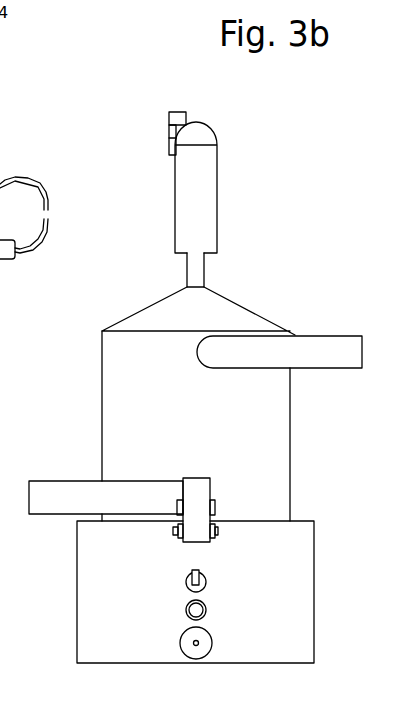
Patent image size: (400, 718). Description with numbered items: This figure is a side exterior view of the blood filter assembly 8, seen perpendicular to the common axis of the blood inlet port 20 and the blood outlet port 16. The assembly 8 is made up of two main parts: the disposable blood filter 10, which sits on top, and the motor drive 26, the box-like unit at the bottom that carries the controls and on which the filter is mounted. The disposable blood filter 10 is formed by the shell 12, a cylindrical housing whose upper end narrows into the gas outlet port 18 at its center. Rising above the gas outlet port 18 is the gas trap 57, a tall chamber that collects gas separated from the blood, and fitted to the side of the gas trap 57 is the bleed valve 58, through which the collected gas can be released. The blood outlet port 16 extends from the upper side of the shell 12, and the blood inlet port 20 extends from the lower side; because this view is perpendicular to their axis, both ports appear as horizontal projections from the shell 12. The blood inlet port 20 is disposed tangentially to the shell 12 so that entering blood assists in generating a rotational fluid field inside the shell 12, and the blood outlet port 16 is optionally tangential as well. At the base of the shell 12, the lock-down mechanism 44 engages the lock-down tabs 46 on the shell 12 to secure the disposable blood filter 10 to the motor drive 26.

The blood filter assembly 8 is at (275, 270).
The disposable blood filter 10 is at (126, 372).
The shell 12 is at (101, 415).
The blood outlet port 16 is at (295, 335).
The gas outlet port 18 is at (203, 283).
The blood inlet port 20 is at (147, 480).
The motor drive 26 is at (314, 590).
The lock-down mechanism 44 is at (198, 490).
The lock-down tabs 46 is at (215, 507).
The gas trap 57 is at (217, 173).
The bleed valve 58 is at (168, 135).